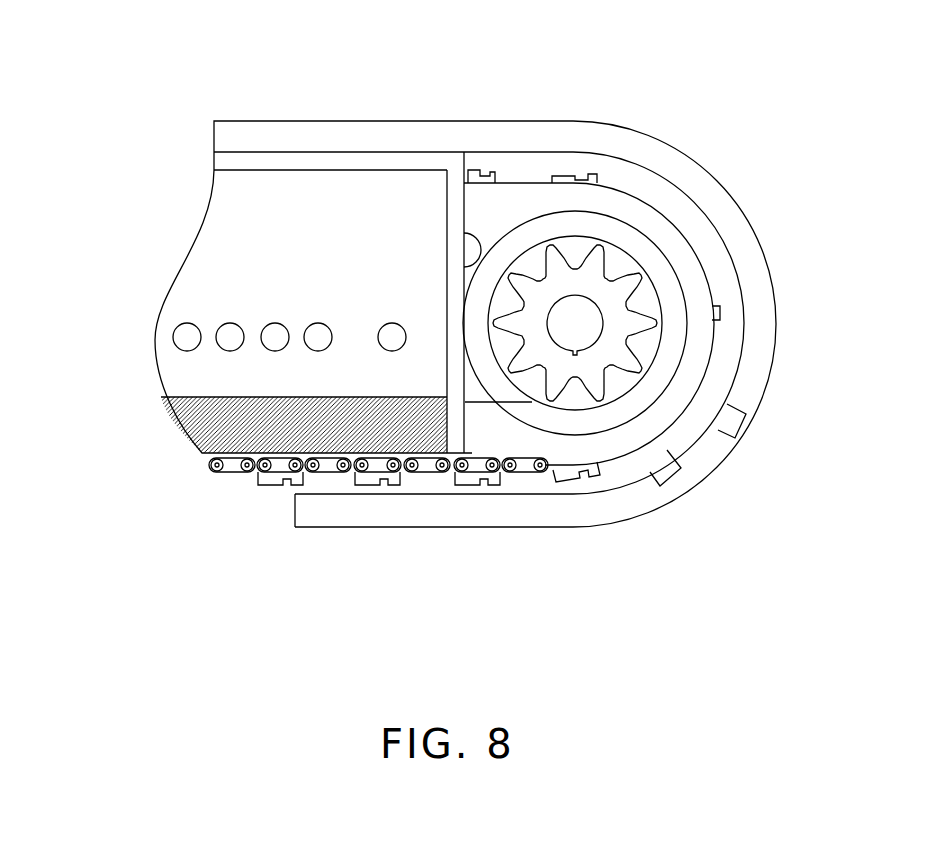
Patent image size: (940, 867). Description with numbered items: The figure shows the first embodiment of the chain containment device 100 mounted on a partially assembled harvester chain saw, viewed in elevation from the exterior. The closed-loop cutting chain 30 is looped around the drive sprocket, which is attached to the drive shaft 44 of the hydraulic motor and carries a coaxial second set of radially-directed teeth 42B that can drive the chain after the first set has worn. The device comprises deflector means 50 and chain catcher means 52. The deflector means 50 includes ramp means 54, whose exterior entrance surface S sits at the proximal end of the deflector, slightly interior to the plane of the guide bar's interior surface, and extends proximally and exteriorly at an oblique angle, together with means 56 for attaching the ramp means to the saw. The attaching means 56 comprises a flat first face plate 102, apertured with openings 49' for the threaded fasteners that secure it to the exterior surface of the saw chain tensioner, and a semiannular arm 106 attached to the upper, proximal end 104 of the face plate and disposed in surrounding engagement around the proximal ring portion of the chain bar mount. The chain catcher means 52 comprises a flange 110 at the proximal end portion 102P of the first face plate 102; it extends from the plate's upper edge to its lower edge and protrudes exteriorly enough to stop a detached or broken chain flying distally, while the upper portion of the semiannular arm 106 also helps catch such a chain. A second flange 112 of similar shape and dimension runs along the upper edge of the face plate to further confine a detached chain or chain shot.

The cutting chain 30 is at (273, 482).
The second set of radially-directed teeth 42B is at (630, 362).
The drive shaft 44 is at (592, 323).
The openings 49' is at (235, 371).
The deflector means 50 is at (697, 534).
The chain catcher means 52 is at (728, 413).
The ramp means 54 is at (385, 565).
The means for attaching the ramp means 56 is at (173, 197).
The chain containment device 100 is at (528, 512).
The first face plate 102 is at (237, 288).
The proximal end portion of the first face plate 102P is at (453, 217).
The upper, proximal end of the first face plate 104 is at (470, 181).
The semiannular arm 106 is at (685, 182).
The flange 110 is at (465, 232).
The second flange 112 is at (233, 162).
The entrance surface S is at (335, 523).